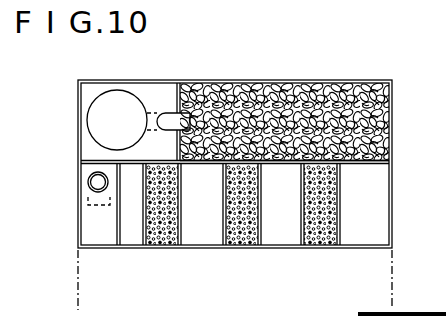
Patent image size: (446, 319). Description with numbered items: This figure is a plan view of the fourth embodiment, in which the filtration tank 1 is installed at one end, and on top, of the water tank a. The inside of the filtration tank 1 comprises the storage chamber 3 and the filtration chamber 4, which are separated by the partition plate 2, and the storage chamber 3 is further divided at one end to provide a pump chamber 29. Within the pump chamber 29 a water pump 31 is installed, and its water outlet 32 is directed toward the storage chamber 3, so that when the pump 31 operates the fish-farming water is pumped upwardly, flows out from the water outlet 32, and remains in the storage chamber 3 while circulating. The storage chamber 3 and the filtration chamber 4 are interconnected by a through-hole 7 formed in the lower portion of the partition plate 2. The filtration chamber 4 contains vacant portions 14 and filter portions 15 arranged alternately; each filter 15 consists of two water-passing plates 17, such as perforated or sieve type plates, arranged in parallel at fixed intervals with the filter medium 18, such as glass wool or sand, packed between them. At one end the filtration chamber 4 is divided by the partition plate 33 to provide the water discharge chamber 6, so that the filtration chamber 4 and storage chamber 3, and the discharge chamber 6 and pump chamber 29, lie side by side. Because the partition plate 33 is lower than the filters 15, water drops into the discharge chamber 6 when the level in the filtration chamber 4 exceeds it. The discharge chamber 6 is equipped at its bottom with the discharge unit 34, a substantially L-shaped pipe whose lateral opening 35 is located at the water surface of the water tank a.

The filtration tank 1 is at (396, 125).
The partition plate 2 is at (95, 161).
The storage chamber 3 is at (289, 100).
The filtration chamber 4 is at (360, 230).
The water discharge chamber 6 is at (98, 240).
The through-hole 7 is at (370, 163).
The vacant portions 14 is at (196, 240).
The filter portions 15 is at (170, 235).
The water-passing plates 17 is at (146, 201).
The filter medium 18 is at (163, 235).
The pump chamber 29 is at (157, 92).
The water pump 31 is at (117, 100).
The water outlet 32 is at (183, 118).
The partition plate 33 is at (120, 235).
The discharge unit 34 is at (87, 183).
The lateral opening 35 is at (88, 206).
The water tank a is at (393, 293).